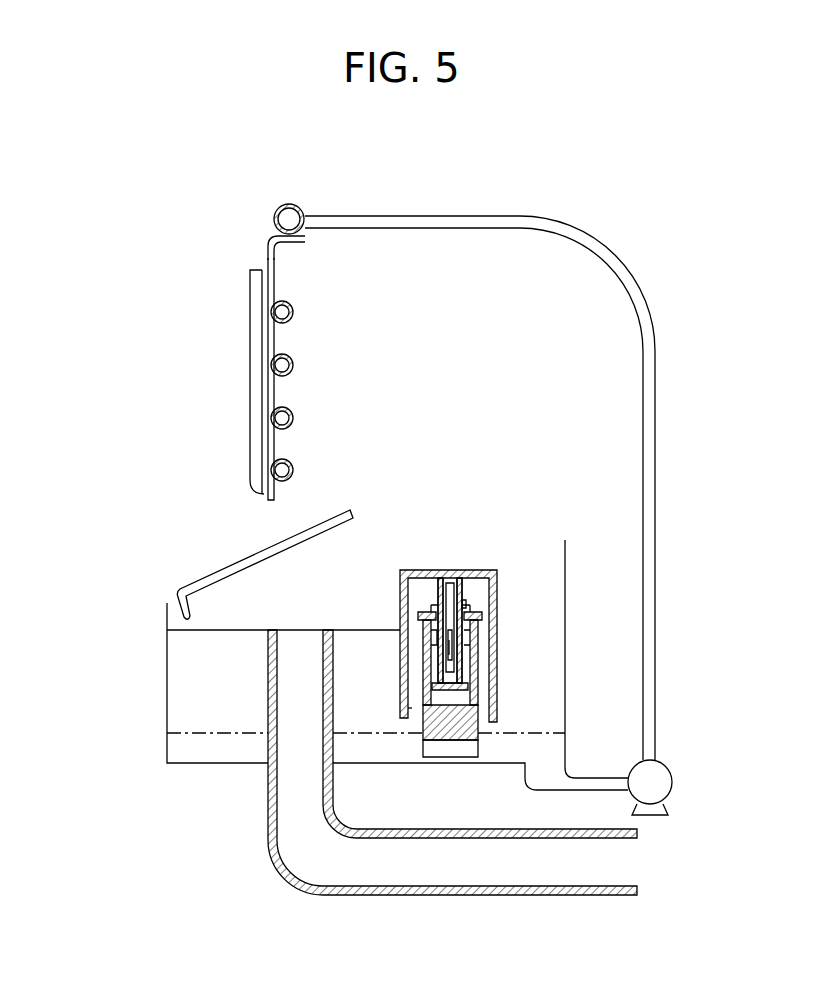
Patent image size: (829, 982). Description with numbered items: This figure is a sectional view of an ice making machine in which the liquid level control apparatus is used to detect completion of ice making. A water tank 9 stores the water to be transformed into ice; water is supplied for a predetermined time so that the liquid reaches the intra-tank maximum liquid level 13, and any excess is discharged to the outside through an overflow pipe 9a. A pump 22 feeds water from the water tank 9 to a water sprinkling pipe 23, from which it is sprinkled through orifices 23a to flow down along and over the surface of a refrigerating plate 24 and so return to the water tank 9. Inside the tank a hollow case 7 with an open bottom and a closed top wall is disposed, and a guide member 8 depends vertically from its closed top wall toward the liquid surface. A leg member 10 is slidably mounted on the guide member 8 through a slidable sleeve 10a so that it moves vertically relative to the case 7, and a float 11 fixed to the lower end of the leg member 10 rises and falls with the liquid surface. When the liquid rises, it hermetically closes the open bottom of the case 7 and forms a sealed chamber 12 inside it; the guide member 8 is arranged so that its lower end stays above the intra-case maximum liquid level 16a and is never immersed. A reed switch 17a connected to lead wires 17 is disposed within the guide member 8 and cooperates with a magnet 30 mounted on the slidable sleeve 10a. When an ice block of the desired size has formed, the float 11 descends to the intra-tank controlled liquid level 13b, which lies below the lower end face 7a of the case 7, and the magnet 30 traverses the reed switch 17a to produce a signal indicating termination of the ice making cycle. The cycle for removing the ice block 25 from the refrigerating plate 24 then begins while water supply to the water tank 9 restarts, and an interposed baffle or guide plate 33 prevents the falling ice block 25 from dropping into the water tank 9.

The hollow case 7 is at (497, 575).
The lower end face of the case 7a is at (470, 735).
The guide member 8 is at (455, 585).
The water tank 9 is at (167, 690).
The overflow pipe 9a is at (270, 740).
The leg member 10 is at (478, 640).
The slidable sleeve 10a is at (475, 610).
The float 11 is at (478, 710).
The sealed chamber 12 is at (403, 595).
The intra-tank maximum liquid level 13 is at (180, 632).
The intra-tank controlled liquid level 13b is at (175, 735).
The intra-case maximum liquid level 16a is at (408, 708).
The lead wire 17 is at (448, 578).
The reed switch 17a is at (455, 660).
The pump 22 is at (672, 782).
The water sprinkling pipe 23 is at (278, 210).
The orifices 23a is at (275, 238).
The refrigerating plate 24 is at (272, 280).
The ice block 25 is at (250, 330).
The magnet 30 is at (480, 618).
The baffle or guide plate 33 is at (345, 510).